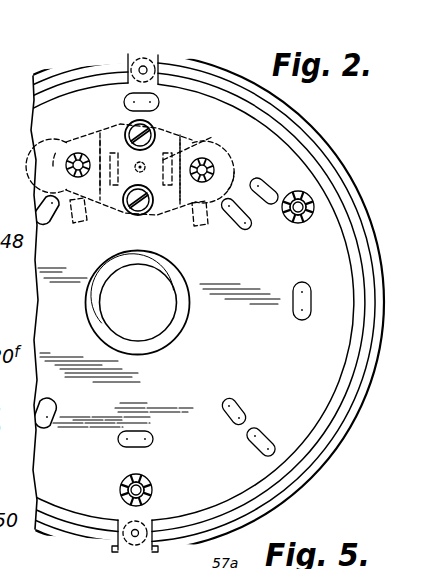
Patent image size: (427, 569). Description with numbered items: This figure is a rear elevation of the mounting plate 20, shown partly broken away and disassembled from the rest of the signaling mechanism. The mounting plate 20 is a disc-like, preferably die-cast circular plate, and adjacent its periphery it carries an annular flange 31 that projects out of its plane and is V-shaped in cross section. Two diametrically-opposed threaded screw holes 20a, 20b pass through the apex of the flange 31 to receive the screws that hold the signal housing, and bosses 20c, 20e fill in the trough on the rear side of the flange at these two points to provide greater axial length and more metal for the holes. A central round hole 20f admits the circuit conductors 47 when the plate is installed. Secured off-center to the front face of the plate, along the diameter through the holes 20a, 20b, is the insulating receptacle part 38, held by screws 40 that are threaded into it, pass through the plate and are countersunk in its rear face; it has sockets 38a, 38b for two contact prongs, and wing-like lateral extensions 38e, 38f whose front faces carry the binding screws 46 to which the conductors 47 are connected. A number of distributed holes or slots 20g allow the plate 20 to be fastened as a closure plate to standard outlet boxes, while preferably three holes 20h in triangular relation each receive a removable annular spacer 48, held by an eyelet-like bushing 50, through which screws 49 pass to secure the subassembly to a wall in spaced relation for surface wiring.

The mounting plate 20 is at (323, 128).
The threaded screw hole 20a is at (143, 66).
The threaded screw hole 20b is at (150, 524).
The boss 20c is at (160, 84).
The boss 20e is at (125, 521).
The central round hole 20f is at (158, 332).
The holes or slots 20g is at (304, 320).
The holes 20h is at (304, 224).
The annular flange 31 is at (268, 110).
The receptacle part 38 is at (168, 213).
The socket 38a is at (116, 140).
The socket 38b is at (213, 140).
The wing-like lateral extension 38e is at (52, 162).
The wing-like lateral extension 38f is at (237, 176).
The screws 40 is at (150, 124).
The binding screws 46 is at (74, 157).
The conductors 47 is at (12, 301).
The annular stud or spacer 48 is at (283, 212).
The screws 49 is at (12, 178).
The bushing 50 is at (290, 220).